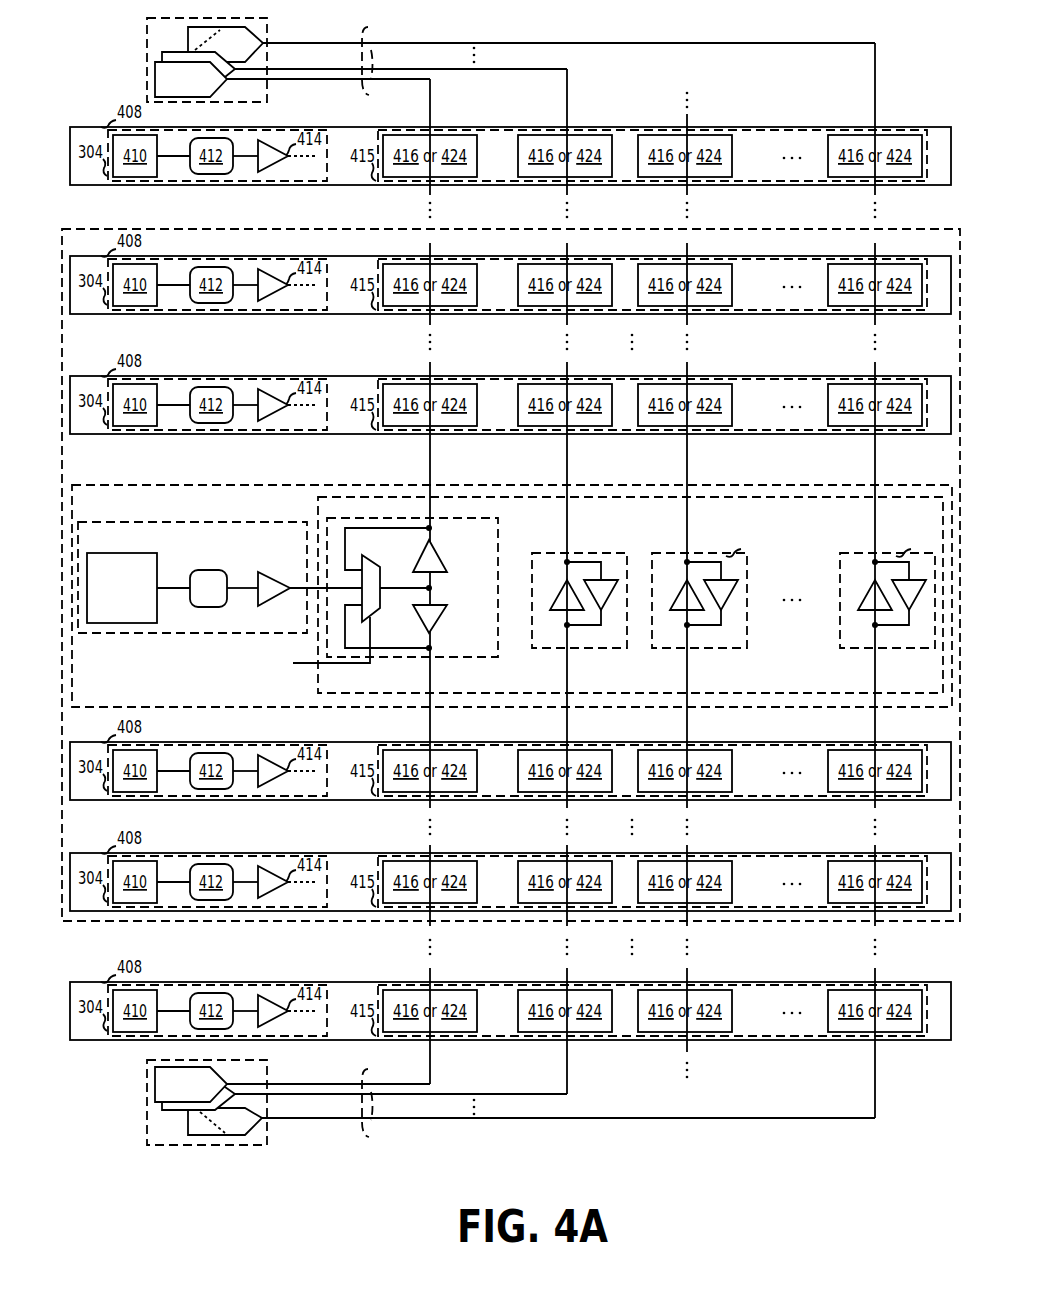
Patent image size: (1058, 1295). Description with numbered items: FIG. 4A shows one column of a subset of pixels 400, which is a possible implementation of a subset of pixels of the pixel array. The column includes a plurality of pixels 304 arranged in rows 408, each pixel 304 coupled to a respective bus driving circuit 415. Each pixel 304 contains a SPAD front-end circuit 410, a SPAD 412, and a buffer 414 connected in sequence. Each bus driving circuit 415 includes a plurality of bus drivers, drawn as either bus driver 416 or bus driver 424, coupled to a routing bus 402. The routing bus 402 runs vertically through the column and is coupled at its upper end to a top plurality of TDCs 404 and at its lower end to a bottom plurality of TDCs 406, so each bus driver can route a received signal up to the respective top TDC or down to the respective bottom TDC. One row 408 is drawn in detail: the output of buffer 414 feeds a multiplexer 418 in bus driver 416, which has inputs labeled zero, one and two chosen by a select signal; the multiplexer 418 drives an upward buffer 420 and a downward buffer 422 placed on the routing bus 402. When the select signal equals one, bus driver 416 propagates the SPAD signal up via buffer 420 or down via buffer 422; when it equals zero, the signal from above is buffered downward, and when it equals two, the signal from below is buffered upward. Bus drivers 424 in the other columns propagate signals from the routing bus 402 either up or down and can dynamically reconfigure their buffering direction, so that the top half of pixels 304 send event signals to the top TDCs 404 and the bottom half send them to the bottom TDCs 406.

The pixel 304 is at (159, 522).
The subset of pixels 400 is at (78, 227).
The routing bus 402 is at (373, 36).
The top plurality of TDCs 404 is at (268, 31).
The bottom plurality of TDCs 406 is at (268, 1075).
The row of pixels 408 is at (99, 487).
The SPAD front-end circuit 410 is at (119, 554).
The SPAD 412 is at (202, 572).
The buffer 414 is at (262, 574).
The bus driving circuit 415 is at (316, 515).
The bus driver 416 is at (499, 534).
The multiplexer 418 is at (366, 557).
The buffer 420 is at (447, 572).
The buffer 422 is at (447, 606).
The bus driver 424 is at (606, 556).